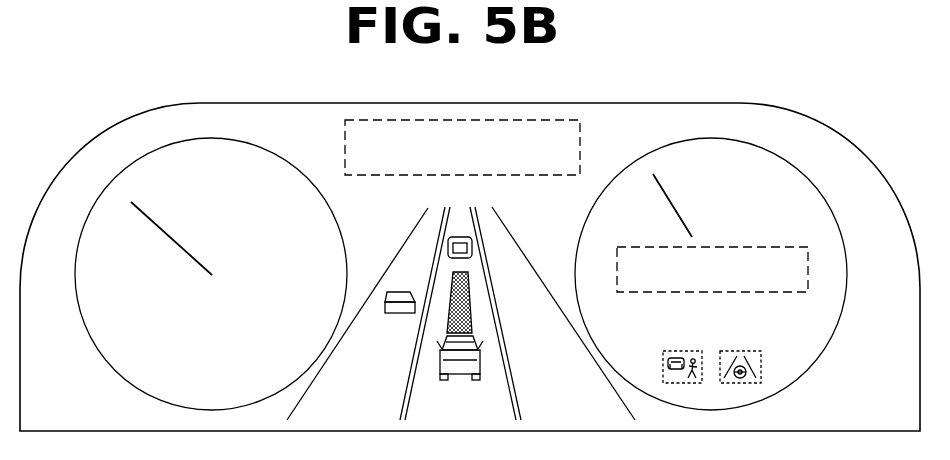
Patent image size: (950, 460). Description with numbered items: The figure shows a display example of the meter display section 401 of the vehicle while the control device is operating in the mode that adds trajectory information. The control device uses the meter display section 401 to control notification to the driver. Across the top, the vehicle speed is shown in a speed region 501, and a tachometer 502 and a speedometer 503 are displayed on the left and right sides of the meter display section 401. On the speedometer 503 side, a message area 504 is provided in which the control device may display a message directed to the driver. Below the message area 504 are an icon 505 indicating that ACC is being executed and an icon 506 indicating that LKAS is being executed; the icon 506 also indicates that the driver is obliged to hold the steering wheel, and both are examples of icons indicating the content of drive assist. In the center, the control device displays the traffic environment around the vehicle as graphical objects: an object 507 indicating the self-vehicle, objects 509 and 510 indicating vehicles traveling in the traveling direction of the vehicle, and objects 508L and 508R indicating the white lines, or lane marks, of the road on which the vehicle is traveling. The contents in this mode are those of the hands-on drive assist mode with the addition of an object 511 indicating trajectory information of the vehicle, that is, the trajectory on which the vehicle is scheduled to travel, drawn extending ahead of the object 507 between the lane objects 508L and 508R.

The meter display section 401 is at (697, 103).
The speed region 501 is at (458, 119).
The tachometer 502 is at (286, 159).
The speedometer 503 is at (634, 162).
The message area 504 is at (774, 247).
The icon indicating that ACC is being executed 505 is at (682, 349).
The icon indicating that LKAS is being executed 506 is at (740, 349).
The object indicating the vehicle (self-vehicle) 507 is at (462, 373).
The object indicating white line 508L is at (399, 391).
The object indicating white line 508R is at (520, 392).
The object indicating vehicle traveling in traveling direction 509 is at (472, 250).
The object indicating vehicle traveling in traveling direction 510 is at (396, 291).
The object indicating trajectory information 511 is at (461, 307).